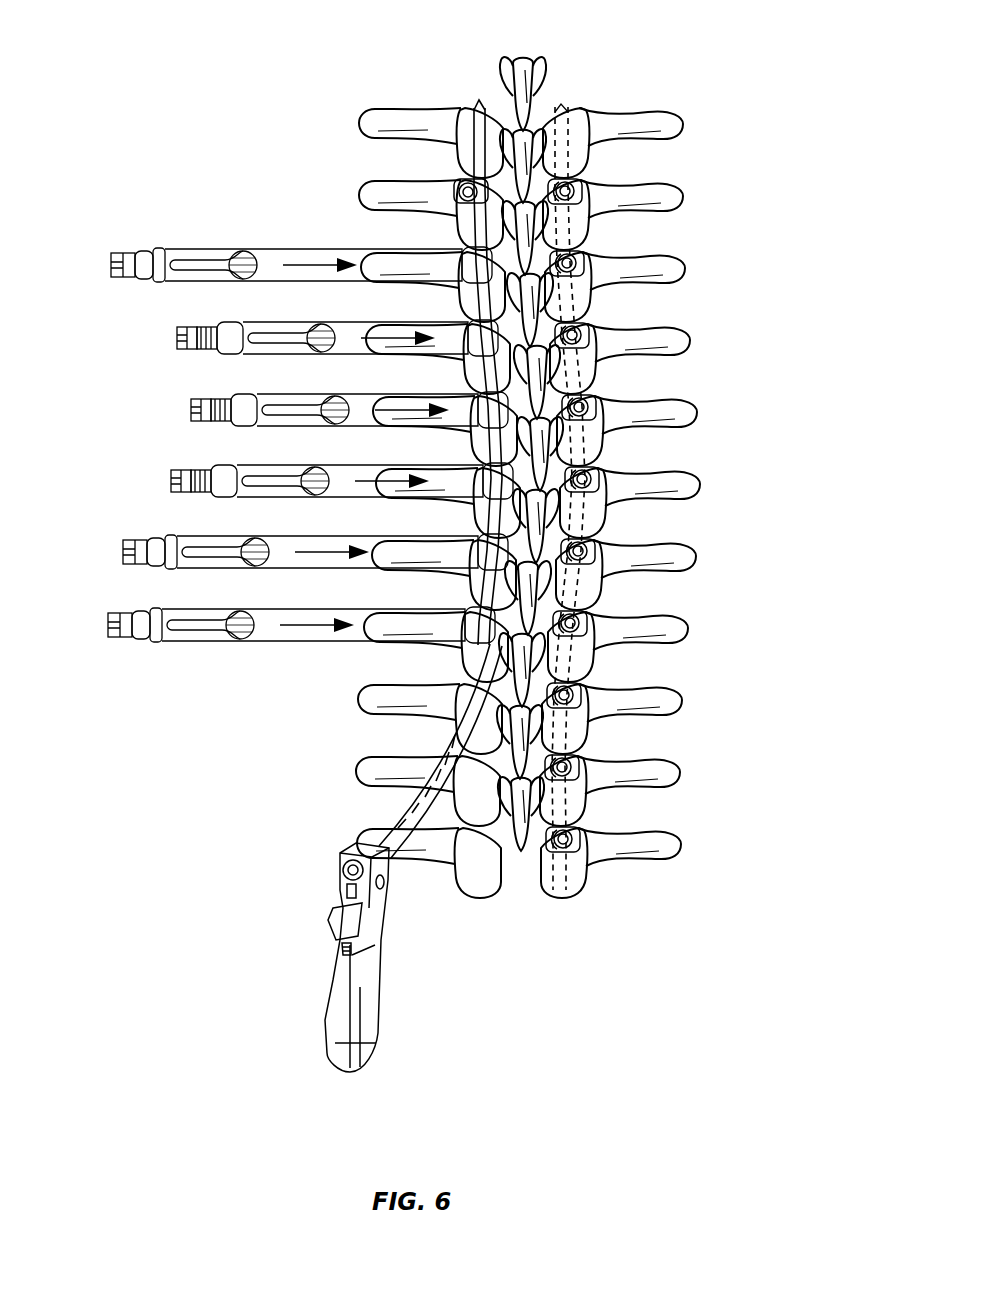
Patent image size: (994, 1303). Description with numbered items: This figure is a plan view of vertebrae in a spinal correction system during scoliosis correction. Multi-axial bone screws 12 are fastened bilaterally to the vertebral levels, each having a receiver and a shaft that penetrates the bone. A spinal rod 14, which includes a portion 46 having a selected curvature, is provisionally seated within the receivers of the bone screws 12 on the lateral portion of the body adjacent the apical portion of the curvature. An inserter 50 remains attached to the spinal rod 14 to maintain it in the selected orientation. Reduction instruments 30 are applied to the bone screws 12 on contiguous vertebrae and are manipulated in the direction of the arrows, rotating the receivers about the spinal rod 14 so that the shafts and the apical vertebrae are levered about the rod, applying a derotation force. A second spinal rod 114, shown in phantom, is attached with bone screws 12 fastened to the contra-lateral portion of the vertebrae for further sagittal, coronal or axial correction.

The multi-axial bone screw 12 is at (586, 333).
The spinal rod 14 is at (458, 225).
The reduction instruments 30 is at (111, 417).
The portion having a selected curvature 46 is at (466, 440).
The inserter 50 is at (320, 882).
The spinal rod 114 is at (583, 587).